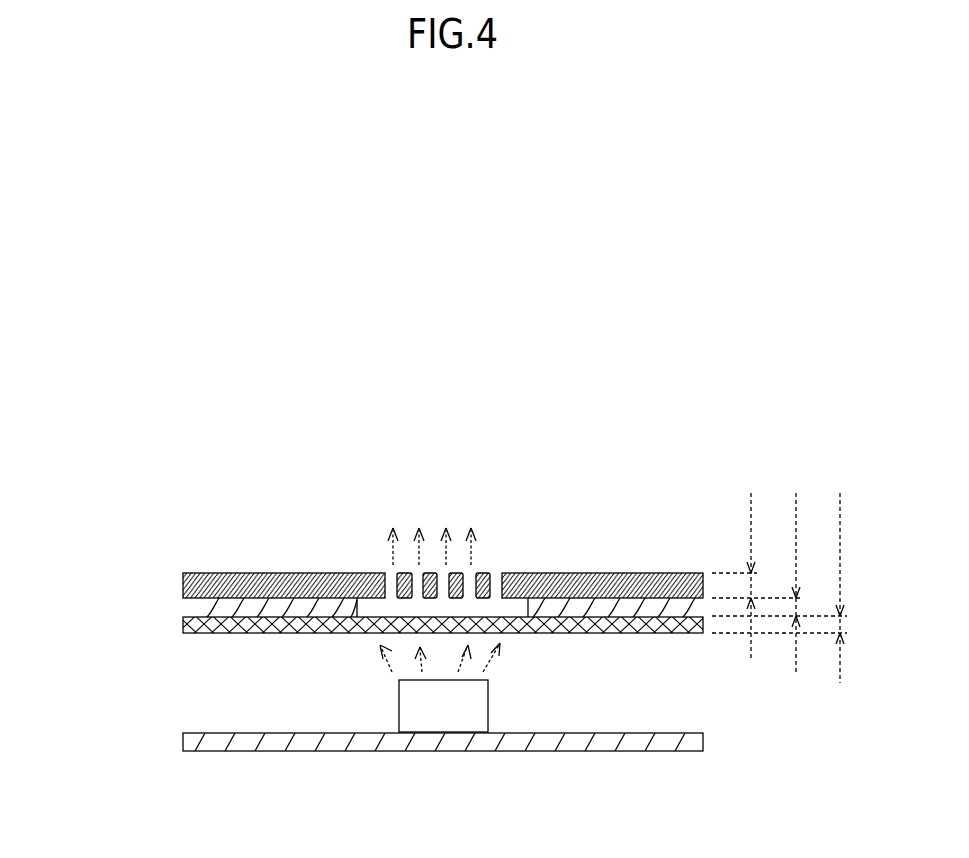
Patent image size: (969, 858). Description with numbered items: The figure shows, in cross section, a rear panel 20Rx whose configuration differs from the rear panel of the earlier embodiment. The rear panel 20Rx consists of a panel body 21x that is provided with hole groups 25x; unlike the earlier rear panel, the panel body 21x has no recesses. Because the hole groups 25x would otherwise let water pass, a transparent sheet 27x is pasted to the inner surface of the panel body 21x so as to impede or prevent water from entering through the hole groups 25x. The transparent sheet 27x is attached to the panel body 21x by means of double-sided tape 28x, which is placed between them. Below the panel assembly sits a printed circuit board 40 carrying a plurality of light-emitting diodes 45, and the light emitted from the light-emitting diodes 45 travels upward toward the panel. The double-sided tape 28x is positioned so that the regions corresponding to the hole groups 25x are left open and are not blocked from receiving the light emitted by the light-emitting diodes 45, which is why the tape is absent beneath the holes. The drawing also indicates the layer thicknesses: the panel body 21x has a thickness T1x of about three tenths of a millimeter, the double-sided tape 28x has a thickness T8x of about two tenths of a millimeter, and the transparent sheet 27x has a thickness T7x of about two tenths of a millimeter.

The rear panel 20Rx is at (225, 571).
The panel body 21x is at (298, 585).
The hole groups 25x is at (495, 563).
The double-sided tape 28x is at (205, 608).
The transparent sheet 27x is at (222, 628).
The light-emitting diodes (LEDs) 45 is at (426, 708).
The printed circuit board 40 is at (658, 738).
The thickness of panel body T1x is at (757, 575).
The thickness of double-sided tape T8x is at (779, 583).
The thickness of transparent sheet T7x is at (796, 588).